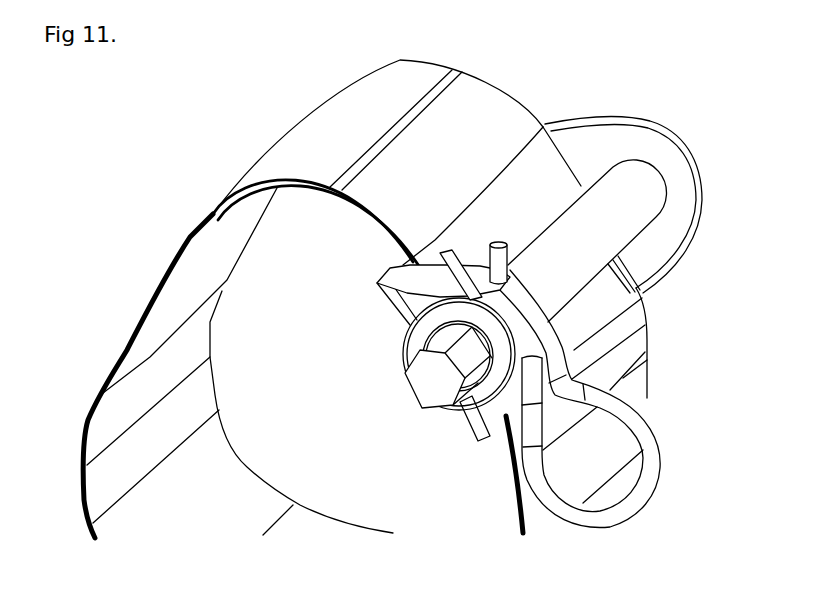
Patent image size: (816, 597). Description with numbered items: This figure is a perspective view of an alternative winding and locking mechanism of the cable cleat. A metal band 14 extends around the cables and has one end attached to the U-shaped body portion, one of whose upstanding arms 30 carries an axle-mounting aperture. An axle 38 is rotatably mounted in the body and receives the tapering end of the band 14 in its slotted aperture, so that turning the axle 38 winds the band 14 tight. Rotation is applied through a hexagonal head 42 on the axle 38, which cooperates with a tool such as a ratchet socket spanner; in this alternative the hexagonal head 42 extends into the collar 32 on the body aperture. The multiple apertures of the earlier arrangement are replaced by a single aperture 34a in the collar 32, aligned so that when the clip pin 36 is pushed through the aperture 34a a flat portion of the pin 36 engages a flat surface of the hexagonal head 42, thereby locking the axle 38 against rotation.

The band 14 is at (195, 260).
The upstanding arm 30 is at (597, 133).
The collar 32 is at (413, 338).
The single aperture 34a is at (408, 285).
The clip pin 36 is at (653, 470).
The axle 38 is at (427, 398).
The hexagonal head 42 is at (420, 378).